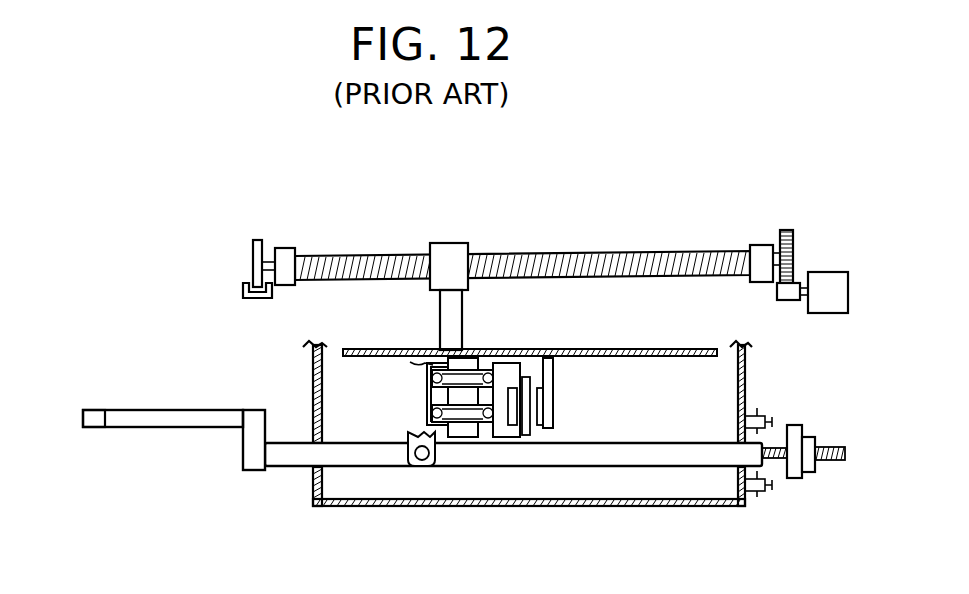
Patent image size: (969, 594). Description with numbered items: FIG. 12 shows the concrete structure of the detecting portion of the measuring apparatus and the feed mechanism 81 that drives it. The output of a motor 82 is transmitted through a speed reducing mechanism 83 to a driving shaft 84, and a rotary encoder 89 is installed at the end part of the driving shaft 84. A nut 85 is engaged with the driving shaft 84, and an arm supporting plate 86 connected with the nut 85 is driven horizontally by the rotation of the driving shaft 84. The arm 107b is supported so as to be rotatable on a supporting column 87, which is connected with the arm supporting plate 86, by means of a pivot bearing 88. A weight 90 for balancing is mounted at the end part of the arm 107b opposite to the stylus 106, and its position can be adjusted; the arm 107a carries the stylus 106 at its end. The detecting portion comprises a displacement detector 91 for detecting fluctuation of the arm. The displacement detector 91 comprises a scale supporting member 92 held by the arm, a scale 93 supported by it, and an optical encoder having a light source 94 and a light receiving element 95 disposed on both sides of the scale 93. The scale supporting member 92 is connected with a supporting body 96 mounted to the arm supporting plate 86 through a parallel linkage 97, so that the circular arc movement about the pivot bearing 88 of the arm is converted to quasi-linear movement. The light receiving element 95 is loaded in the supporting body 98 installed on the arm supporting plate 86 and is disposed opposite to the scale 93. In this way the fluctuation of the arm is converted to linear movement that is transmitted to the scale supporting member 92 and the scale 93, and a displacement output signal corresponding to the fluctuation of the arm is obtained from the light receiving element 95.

The feed mechanism 81 is at (524, 219).
The motor 82 is at (830, 278).
The speed reducing mechanism 83 is at (797, 253).
The driving shaft 84 is at (592, 250).
The nut 85 is at (453, 253).
The arm supporting plate 86 is at (392, 349).
The supporting column 87 is at (414, 432).
The pivot bearing 88 is at (416, 466).
The rotary encoder 89 is at (255, 266).
The weight 90 is at (805, 426).
The displacement detector 91 is at (571, 425).
The scale supporting member 92 is at (495, 437).
The scale 93 is at (527, 437).
The light source 94 is at (513, 425).
The light receiving element 95 is at (540, 425).
The supporting body 96 is at (432, 395).
The parallel linkage 97 is at (458, 437).
The supporting body 98 is at (553, 380).
The stylus 106 is at (95, 430).
The arm 107a is at (188, 410).
The arm 107b is at (282, 466).